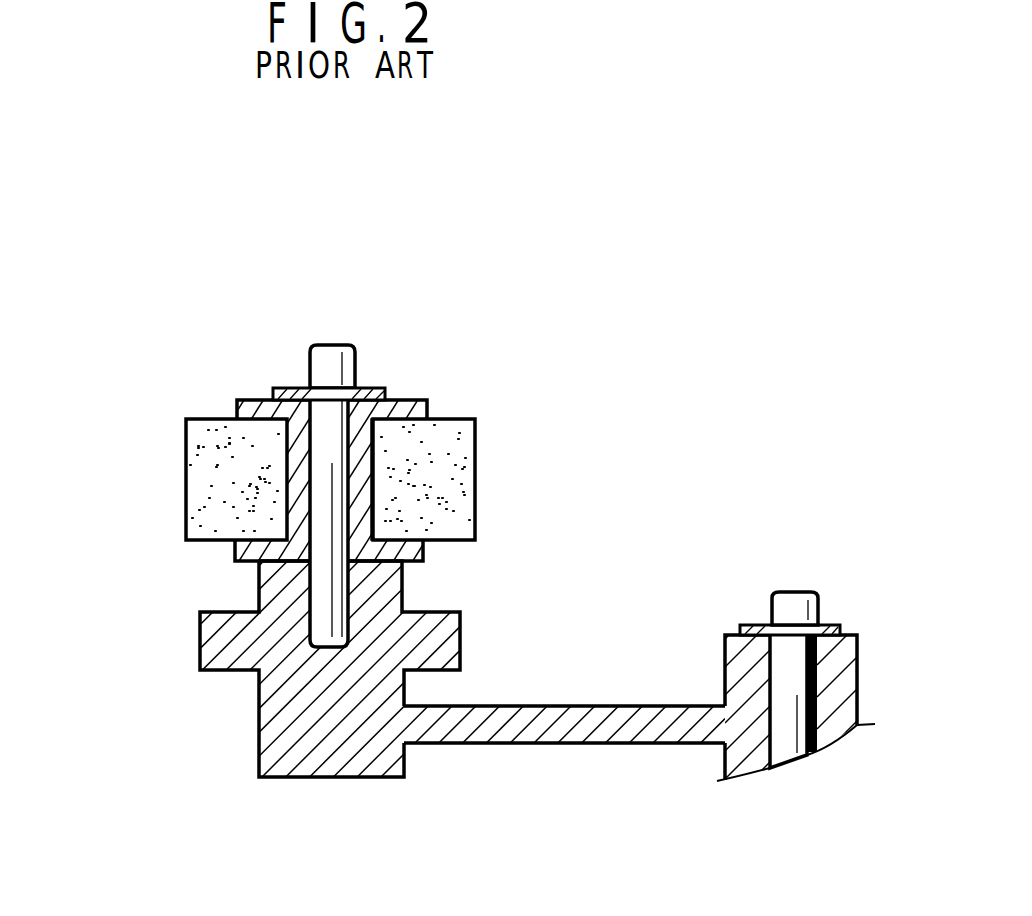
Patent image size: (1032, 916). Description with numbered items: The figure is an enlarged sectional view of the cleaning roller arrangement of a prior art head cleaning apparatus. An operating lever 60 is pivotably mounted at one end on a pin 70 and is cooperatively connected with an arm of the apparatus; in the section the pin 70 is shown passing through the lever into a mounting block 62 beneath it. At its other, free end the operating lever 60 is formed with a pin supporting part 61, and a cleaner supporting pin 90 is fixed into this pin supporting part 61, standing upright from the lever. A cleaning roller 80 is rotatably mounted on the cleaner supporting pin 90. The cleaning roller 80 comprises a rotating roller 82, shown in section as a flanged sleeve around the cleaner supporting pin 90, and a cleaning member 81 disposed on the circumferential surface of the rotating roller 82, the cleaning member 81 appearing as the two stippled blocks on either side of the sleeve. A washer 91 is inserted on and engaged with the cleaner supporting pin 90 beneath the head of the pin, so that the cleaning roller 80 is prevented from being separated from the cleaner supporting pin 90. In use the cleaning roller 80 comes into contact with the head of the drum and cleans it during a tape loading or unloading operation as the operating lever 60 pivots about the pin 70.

The operating lever 60 is at (572, 725).
The pin supporting part 61 is at (210, 640).
The mounting block 62 is at (845, 650).
The pin 70 is at (792, 605).
The cleaning roller 80 is at (180, 388).
The cleaning member 81 is at (460, 477).
The rotating roller 82 is at (412, 400).
The cleaner supporting pin 90 is at (335, 362).
The washer 91 is at (288, 393).